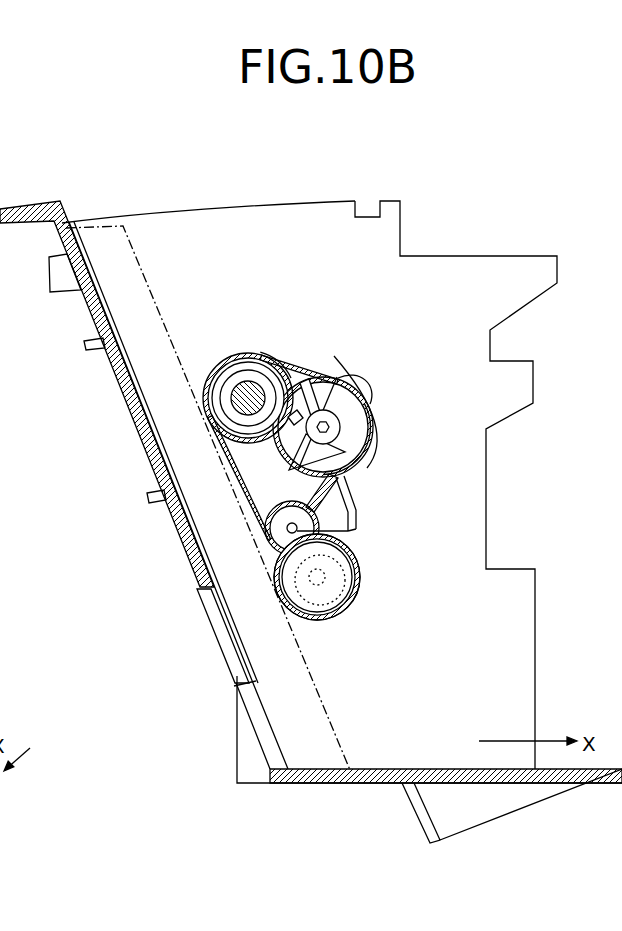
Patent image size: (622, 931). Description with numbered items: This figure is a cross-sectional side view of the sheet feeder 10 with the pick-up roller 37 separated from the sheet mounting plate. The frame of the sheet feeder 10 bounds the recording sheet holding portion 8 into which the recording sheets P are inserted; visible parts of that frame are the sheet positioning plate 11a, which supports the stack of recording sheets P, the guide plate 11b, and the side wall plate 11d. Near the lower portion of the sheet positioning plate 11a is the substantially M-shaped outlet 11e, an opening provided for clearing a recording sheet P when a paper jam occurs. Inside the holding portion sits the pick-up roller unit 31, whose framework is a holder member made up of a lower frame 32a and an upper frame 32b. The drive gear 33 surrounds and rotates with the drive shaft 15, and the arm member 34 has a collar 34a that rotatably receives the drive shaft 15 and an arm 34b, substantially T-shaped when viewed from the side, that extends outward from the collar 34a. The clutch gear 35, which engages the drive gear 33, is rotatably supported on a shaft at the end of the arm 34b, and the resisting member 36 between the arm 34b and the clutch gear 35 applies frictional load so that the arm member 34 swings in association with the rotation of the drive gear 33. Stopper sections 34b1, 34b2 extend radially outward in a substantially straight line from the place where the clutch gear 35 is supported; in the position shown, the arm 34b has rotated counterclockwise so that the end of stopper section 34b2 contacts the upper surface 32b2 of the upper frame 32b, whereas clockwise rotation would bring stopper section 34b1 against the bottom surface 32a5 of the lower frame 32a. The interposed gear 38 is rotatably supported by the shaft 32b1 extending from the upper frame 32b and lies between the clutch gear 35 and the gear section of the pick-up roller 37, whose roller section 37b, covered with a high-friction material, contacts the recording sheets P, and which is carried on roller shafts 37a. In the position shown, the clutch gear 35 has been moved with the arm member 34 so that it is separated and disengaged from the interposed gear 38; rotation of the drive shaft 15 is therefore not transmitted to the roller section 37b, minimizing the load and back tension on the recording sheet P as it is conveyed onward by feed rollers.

The recording sheet holding portion 8 is at (233, 236).
The sheet feeder 10 is at (534, 180).
The sheet positioning plate 11a is at (128, 400).
The guide plate 11b is at (320, 787).
The side wall plate 11d is at (310, 208).
The outlet 11e is at (207, 590).
The drive shaft 15 is at (212, 372).
The pick-up roller unit 31 is at (319, 313).
The lower frame 32a is at (208, 384).
The bottom surface 32a5 is at (300, 418).
The upper frame 32b is at (302, 363).
The shaft 32b1 is at (347, 533).
The upper surface 32b2 is at (330, 405).
The drive gear 33 is at (280, 370).
The arm member 34 is at (265, 443).
The collar 34a is at (236, 386).
The arm 34b is at (285, 468).
The stopper section 34b1 is at (347, 475).
The stopper section 34b2 is at (372, 425).
The clutch gear 35 is at (357, 437).
The resisting member 36 is at (326, 378).
The pick-up roller 37 is at (388, 582).
The roller shaft 37a is at (347, 587).
The roller section 37b is at (322, 613).
The interposed gear 38 is at (275, 537).
The recording sheet P is at (330, 716).